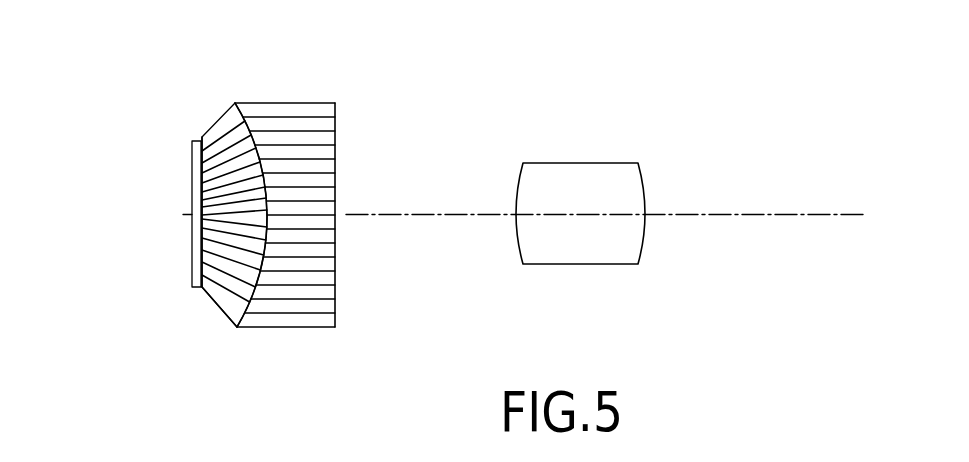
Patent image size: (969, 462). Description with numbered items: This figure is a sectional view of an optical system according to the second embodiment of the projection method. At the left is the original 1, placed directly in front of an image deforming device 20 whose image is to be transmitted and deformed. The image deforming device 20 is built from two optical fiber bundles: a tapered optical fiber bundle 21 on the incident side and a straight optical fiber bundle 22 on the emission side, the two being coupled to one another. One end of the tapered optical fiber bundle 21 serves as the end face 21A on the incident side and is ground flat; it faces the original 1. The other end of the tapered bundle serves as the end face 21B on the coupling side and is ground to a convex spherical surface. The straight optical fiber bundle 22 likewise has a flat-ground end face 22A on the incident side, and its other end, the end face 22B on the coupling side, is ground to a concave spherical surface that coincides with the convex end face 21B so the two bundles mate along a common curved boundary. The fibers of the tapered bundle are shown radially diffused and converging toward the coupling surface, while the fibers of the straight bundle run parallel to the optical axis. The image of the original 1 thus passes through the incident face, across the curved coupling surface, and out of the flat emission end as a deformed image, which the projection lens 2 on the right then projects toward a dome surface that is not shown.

The original 1 is at (195, 233).
The projection lens 2 is at (622, 170).
The image deforming device 20 is at (347, 163).
The tapered optical fiber bundle 21 is at (220, 135).
The end face on the incident side of the tapered optical fiber bundle 21A is at (200, 213).
The end face on the coupling side of the tapered optical fiber bundle 21B is at (230, 285).
The straight optical fiber bundle 22 is at (318, 108).
The end face on the incident side of the straight optical fiber bundle 22A is at (337, 301).
The end face on the coupling side of the straight optical fiber bundle 22B is at (225, 283).